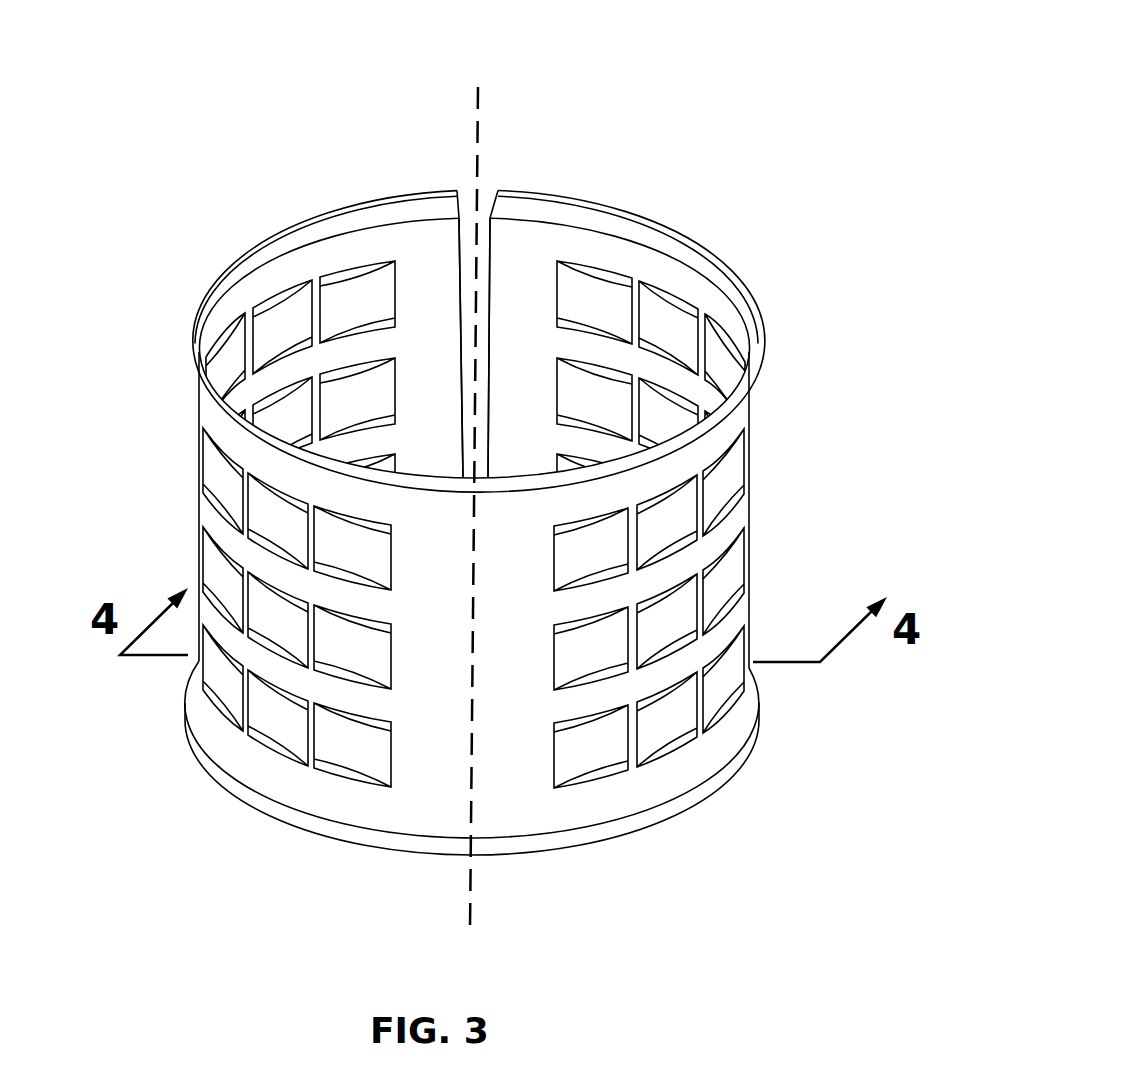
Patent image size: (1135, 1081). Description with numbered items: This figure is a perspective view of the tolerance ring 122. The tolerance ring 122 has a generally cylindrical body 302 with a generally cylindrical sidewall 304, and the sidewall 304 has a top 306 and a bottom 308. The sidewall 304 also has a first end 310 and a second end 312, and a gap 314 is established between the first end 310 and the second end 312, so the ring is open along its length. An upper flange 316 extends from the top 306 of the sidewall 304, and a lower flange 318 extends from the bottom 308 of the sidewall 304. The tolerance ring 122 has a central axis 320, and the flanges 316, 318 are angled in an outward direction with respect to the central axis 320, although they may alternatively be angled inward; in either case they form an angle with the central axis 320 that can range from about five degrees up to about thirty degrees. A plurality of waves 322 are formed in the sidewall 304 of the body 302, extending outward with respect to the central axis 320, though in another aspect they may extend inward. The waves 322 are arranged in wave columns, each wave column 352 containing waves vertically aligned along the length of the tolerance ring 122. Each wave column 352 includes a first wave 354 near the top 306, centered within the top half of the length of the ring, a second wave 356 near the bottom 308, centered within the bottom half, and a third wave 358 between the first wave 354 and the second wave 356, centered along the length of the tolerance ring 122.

The tolerance ring 122 is at (769, 102).
The body 302 is at (496, 477).
The sidewall 304 is at (745, 510).
The top 306 is at (732, 417).
The bottom 308 is at (722, 737).
The first end 310 is at (427, 247).
The second end 312 is at (518, 247).
The gap 314 is at (474, 290).
The upper flange 316 is at (343, 220).
The lower flange 318 is at (502, 843).
The central axis 320 is at (478, 125).
The waves 322 is at (715, 580).
The wave column 352 is at (233, 660).
The first wave 354 is at (340, 557).
The second wave 356 is at (336, 744).
The third wave 358 is at (340, 648).